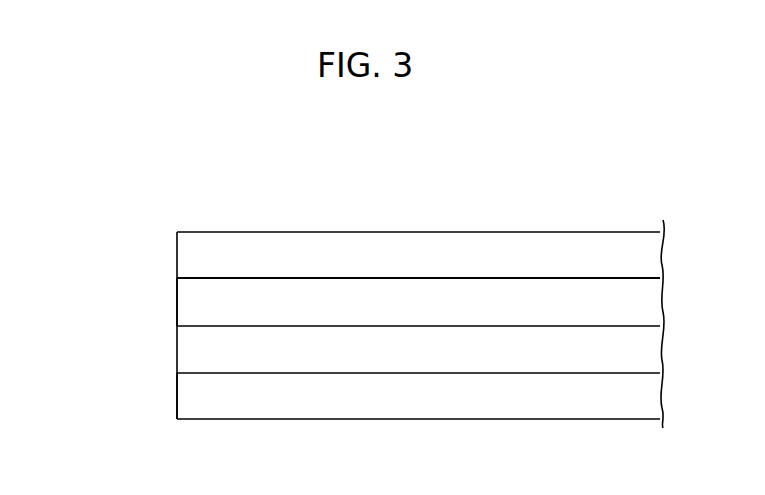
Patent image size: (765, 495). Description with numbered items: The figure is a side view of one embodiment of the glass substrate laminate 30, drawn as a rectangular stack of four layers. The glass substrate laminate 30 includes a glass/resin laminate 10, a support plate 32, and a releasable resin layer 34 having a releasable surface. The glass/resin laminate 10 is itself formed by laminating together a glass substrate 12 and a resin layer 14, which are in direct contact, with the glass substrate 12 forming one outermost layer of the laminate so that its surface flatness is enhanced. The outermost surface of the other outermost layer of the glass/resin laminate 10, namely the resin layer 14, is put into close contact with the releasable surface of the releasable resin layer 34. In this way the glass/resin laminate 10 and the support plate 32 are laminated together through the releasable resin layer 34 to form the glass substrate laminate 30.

The glass substrate laminate 30 is at (160, 176).
The glass/resin laminate 10 is at (120, 240).
The glass substrate 12 is at (177, 254).
The resin layer 14 is at (177, 303).
The releasable resin layer 34 is at (177, 348).
The support plate 32 is at (177, 394).